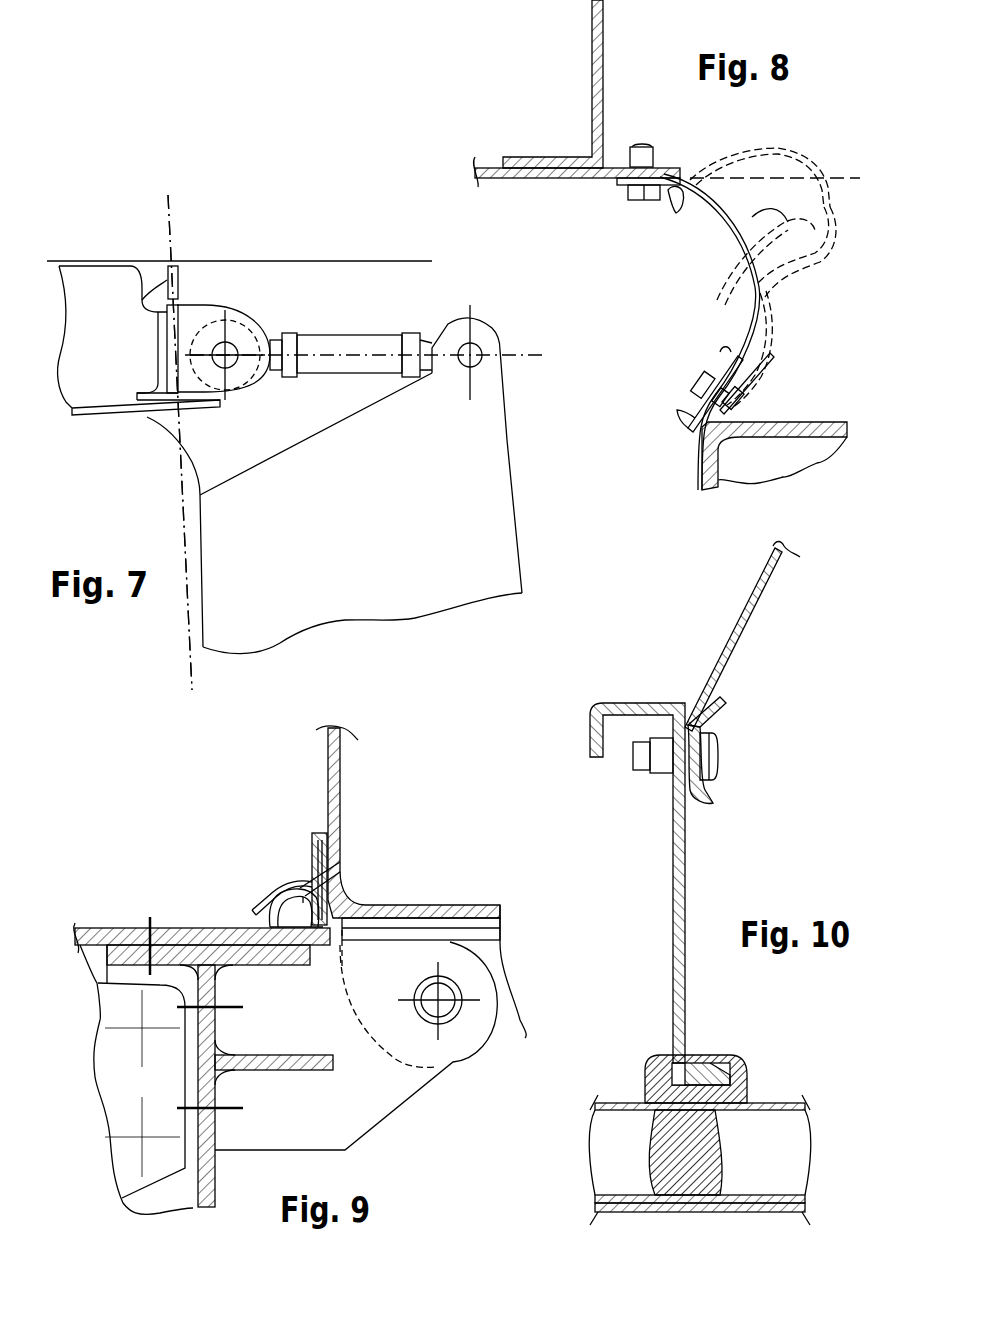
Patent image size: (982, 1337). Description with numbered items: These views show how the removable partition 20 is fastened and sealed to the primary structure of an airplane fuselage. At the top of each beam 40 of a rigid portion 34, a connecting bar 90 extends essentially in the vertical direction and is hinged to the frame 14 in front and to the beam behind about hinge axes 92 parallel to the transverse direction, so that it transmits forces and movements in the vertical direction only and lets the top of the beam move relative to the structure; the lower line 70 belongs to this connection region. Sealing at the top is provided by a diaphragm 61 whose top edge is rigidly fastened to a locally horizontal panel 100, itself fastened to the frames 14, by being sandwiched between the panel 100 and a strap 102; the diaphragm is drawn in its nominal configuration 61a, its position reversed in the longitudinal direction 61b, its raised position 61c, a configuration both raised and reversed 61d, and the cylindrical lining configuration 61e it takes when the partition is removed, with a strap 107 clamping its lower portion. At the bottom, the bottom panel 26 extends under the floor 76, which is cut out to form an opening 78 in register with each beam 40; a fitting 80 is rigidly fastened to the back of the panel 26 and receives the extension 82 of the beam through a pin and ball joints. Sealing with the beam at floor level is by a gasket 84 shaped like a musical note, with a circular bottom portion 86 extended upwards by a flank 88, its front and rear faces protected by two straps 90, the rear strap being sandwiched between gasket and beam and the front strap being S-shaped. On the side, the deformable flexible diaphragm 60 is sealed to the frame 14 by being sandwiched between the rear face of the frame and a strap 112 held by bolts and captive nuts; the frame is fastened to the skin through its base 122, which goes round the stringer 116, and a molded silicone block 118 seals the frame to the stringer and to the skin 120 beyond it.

In FIG. 7, the frame 14 is at (172, 345).
In FIG. 8, the frame 14 is at (603, 2).
In FIG. 10, the frame 14 is at (687, 878).
In FIG. 7, the partition 20 is at (438, 537).
In FIG. 9, the bottom panel 26 is at (212, 1192).
In FIG. 9, the rigid portion 34 is at (372, 790).
In FIG. 7, the beam 40 is at (452, 445).
In FIG. 9, the beam 40 is at (398, 807).
In FIG. 10, the deformable flexible diaphragm 60 is at (757, 623).
In FIG. 7, the diaphragm 61 is at (183, 483).
In FIG. 8, the nominal configuration of the diaphragm 61a is at (750, 327).
In FIG. 8, the reversed position of the diaphragm 61b is at (773, 332).
In FIG. 8, the raised position of the diaphragm 61c is at (742, 238).
In FIG. 8, the raised and reversed configuration of the diaphragm 61d is at (842, 228).
In FIG. 8, the deployed lining configuration of the diaphragm 61e is at (848, 176).
In FIG. 7, the link arm 70 is at (205, 462).
In FIG. 9, the floor 76 is at (118, 935).
In FIG. 9, the opening 78 is at (414, 925).
In FIG. 9, the fitting 80 is at (392, 1072).
In FIG. 9, the extension 82 is at (493, 1035).
In FIG. 9, the gasket 84 is at (272, 890).
In FIG. 9, the bottom portion 86 is at (300, 893).
In FIG. 9, the flank 88 is at (314, 845).
In FIG. 7, the strap / connecting bar 90 is at (350, 336).
In FIG. 9, the strap / connecting bar 90 is at (343, 860).
In FIG. 7, the hinge axis 92 is at (228, 352).
In FIG. 8, the locally horizontal panel 100 is at (486, 170).
In FIG. 8, the strap 102 is at (674, 200).
In FIG. 8, the strap 107 is at (683, 408).
In FIG. 10, the strap 112 is at (720, 710).
In FIG. 10, the stringer 116 is at (780, 1103).
In FIG. 10, the block of sealing material 118 is at (730, 1060).
In FIG. 10, the lower sheet 120 is at (752, 1206).
In FIG. 10, the base 122 is at (692, 1075).